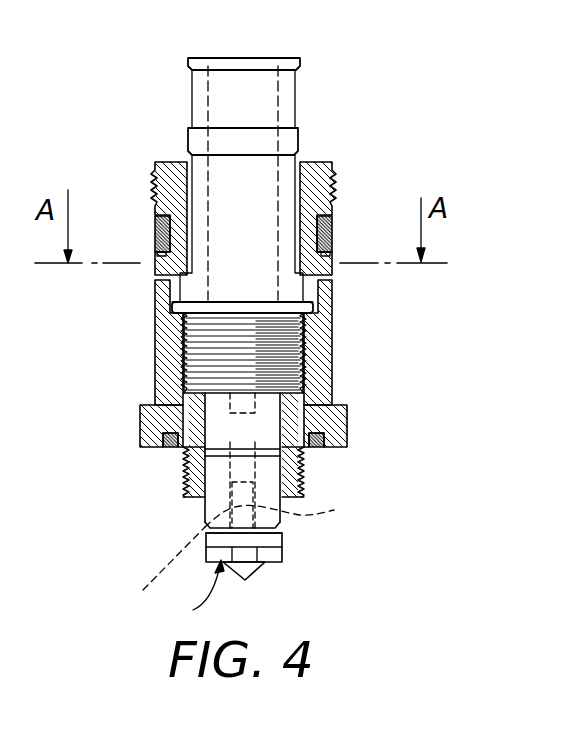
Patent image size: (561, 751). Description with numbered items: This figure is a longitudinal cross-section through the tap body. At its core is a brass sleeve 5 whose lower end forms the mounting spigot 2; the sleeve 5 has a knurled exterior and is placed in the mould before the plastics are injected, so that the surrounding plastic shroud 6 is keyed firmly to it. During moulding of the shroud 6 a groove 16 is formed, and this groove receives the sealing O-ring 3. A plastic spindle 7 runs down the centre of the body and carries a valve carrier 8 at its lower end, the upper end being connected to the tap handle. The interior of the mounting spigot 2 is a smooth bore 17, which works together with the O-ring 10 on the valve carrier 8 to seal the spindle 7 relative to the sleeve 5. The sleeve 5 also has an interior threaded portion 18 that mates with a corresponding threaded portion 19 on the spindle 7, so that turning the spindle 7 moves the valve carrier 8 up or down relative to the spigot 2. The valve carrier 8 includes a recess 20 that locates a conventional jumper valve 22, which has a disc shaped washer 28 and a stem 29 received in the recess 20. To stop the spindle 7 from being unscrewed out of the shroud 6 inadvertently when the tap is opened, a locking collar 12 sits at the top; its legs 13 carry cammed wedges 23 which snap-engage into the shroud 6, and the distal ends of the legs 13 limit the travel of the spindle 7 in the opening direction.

The mounting spigot 2 is at (183, 482).
The sealing O-ring 3 is at (316, 448).
The brass sleeve 5 is at (310, 428).
The plastic shroud 6 is at (333, 360).
The plastic spindle 7 is at (200, 90).
The valve carrier 8 is at (285, 526).
The O-ring 10 is at (220, 456).
The locking collar 12 is at (315, 158).
The legs 13 is at (304, 228).
The groove 16 is at (173, 433).
The smooth bore 17 is at (303, 478).
The interior threaded portion 18 is at (302, 398).
The threaded portion 19 is at (185, 360).
The recess 20 is at (157, 570).
The jumper valve 22 is at (188, 592).
The cammed wedges 23 is at (160, 256).
The disc shaped washer 28 is at (268, 552).
The stem 29 is at (286, 505).